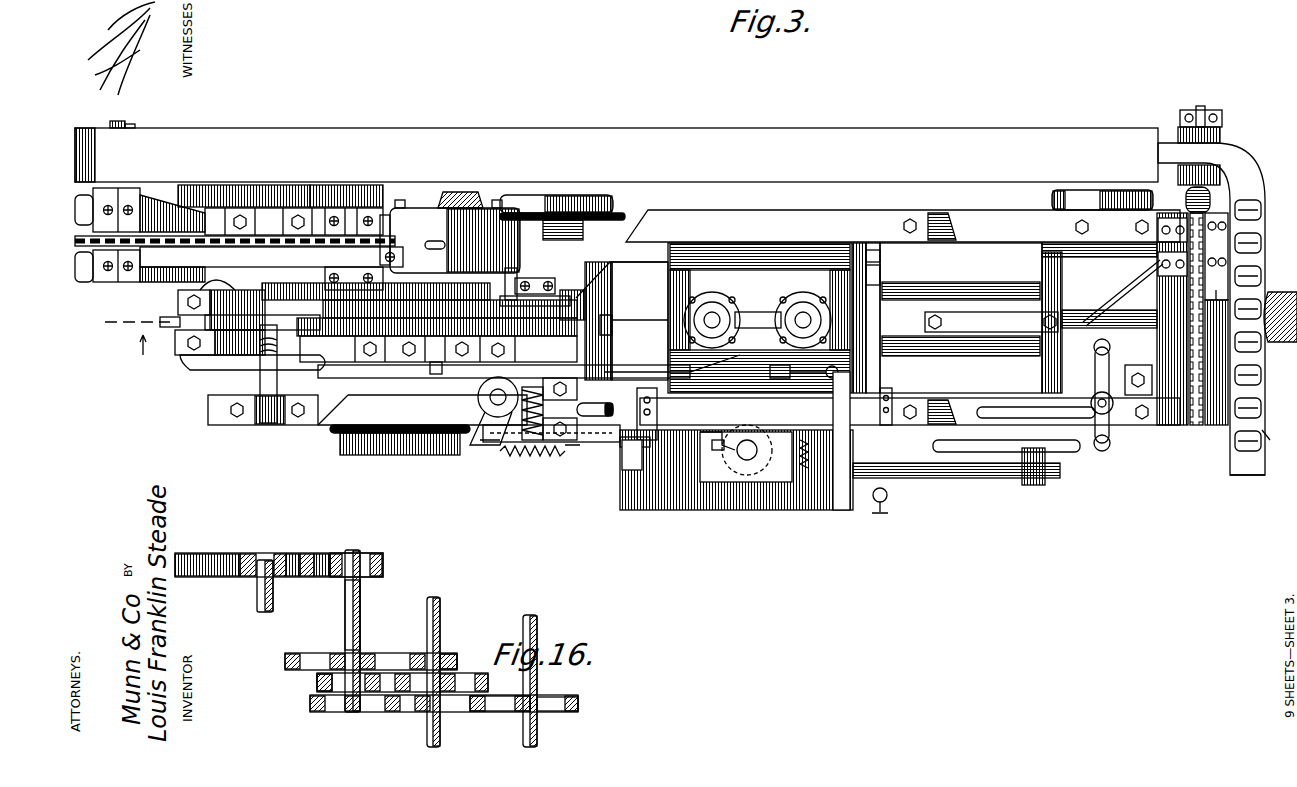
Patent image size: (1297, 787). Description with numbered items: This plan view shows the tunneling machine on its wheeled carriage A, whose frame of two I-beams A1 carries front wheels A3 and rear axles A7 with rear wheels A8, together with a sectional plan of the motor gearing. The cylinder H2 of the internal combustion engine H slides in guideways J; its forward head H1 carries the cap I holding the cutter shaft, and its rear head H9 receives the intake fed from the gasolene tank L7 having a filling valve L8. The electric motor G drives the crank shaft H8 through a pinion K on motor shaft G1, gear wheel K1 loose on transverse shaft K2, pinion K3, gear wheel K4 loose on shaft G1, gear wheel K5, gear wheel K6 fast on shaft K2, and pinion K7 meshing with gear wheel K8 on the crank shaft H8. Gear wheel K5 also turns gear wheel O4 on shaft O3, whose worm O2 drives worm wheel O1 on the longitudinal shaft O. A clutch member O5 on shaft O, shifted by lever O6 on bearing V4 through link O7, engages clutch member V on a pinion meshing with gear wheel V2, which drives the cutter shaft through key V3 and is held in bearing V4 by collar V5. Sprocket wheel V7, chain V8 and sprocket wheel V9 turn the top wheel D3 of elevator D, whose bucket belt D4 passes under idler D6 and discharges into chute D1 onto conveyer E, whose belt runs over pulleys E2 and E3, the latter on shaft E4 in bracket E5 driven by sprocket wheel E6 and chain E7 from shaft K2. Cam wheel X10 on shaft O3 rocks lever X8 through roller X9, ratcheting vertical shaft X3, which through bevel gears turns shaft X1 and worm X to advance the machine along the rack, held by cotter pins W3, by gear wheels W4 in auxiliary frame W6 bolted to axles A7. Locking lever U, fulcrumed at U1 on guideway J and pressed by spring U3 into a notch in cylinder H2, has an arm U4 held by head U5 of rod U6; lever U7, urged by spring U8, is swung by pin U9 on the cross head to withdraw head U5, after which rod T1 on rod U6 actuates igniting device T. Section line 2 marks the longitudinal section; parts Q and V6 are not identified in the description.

In FIG. 3, the top frame beam E is at (1029, 147).
In FIG. 3, the beam end bracket E2 is at (1215, 128).
In FIG. 3, the beam lug E3 is at (130, 128).
In FIG. 3, the beam lug E4 is at (113, 126).
In FIG. 3, the left bearing block E5 is at (116, 270).
In FIG. 3, the left lower bearing block E6 is at (88, 270).
In FIG. 3, the chain shaft E7 is at (240, 247).
In FIG. 3, the sprocket D is at (1263, 372).
In FIG. 3, the chain guide arm D1 is at (1245, 165).
In FIG. 3, the chain D3 is at (1262, 236).
In FIG. 3, the chain end D4 is at (1250, 445).
In FIG. 3, the chain link D6 is at (1262, 440).
In FIG. 3, the gear column V is at (1175, 426).
In FIG. 3, the bolt block V2 is at (1156, 308).
In FIG. 3, the bar V3 is at (1020, 290).
In FIG. 3, the diagonal rod V4 is at (1112, 294).
In FIG. 3, the vertical gear V5 is at (1042, 262).
In FIG. 3, the plate V6 is at (1210, 295).
In FIG. 3, the rack V7 is at (1196, 426).
In FIG. 3, the block V8 is at (1215, 319).
In FIG. 3, the cap V9 is at (1185, 222).
In FIG. 3, the longitudinal beam J is at (854, 218).
In FIG. 3, the main frame A is at (1018, 318).
In FIG. 3, the frame wedge A1 is at (948, 225).
In FIG. 3, the frame pad A3 is at (1095, 190).
In FIG. 3, the frame pad A7 is at (584, 226).
In FIG. 3, the frame pad A8 is at (543, 195).
In FIG. 3, the gear housing G is at (420, 208).
In FIG. 16, the shaft G1 is at (442, 636).
In FIG. 3, the gear K is at (343, 254).
In FIG. 16, the gear K is at (458, 660).
In FIG. 3, the gear K1 is at (305, 285).
In FIG. 16, the gear K1 is at (390, 653).
In FIG. 3, the shaft K2 is at (345, 290).
In FIG. 16, the shaft K2 is at (345, 628).
In FIG. 3, the gear K3 is at (438, 349).
In FIG. 16, the gear K3 is at (317, 685).
In FIG. 3, the gear K4 is at (455, 318).
In FIG. 16, the gear K4 is at (475, 678).
In FIG. 3, the gear K5 is at (415, 362).
In FIG. 16, the gear K5 is at (470, 712).
In FIG. 3, the gear K6 is at (312, 405).
In FIG. 16, the gear K6 is at (335, 712).
In FIG. 3, the gear K7 is at (375, 185).
In FIG. 16, the gear K7 is at (348, 550).
In FIG. 3, the gear K8 is at (278, 185).
In FIG. 16, the gear K8 is at (242, 553).
In FIG. 3, the bracket H is at (622, 280).
In FIG. 3, the block H1 is at (872, 265).
In FIG. 3, the carriage H2 is at (790, 262).
In FIG. 3, the shaft H8 is at (260, 378).
In FIG. 16, the shaft H8 is at (257, 600).
In FIG. 3, the housing H9 is at (634, 316).
In FIG. 3, the plate I is at (880, 283).
In FIG. 3, the bearing Q is at (710, 292).
In FIG. 3, the rod O is at (600, 403).
In FIG. 3, the spring O1 is at (532, 455).
In FIG. 3, the plate O2 is at (505, 448).
In FIG. 3, the shaft O3 is at (535, 280).
In FIG. 16, the shaft O3 is at (538, 648).
In FIG. 3, the ratchet O4 is at (550, 372).
In FIG. 16, the ratchet O4 is at (540, 697).
In FIG. 3, the link O5 is at (1096, 412).
In FIG. 3, the link pin O6 is at (1110, 443).
In FIG. 3, the rod O7 is at (1005, 452).
In FIG. 3, the cam X is at (260, 300).
In FIG. 3, the block X1 is at (178, 300).
In FIG. 3, the column X3 is at (585, 265).
In FIG. 3, the gear X8 is at (583, 280).
In FIG. 3, the block X9 is at (545, 278).
In FIG. 3, the pin X10 is at (518, 270).
In FIG. 3, the arrow W3 is at (180, 342).
In FIG. 3, the block W4 is at (190, 292).
In FIG. 3, the gear W6 is at (205, 355).
In FIG. 3, the section line 2 is at (133, 320).
In FIG. 3, the housing U is at (765, 470).
In FIG. 3, the disc U1 is at (747, 440).
In FIG. 3, the plate U3 is at (795, 470).
In FIG. 3, the block U4 is at (715, 468).
In FIG. 3, the pawl U5 is at (717, 422).
In FIG. 3, the rod U6 is at (630, 437).
In FIG. 3, the cam U7 is at (478, 410).
In FIG. 3, the spring end U8 is at (552, 452).
In FIG. 3, the pin U9 is at (440, 372).
In FIG. 3, the lever T is at (850, 378).
In FIG. 3, the block T1 is at (640, 392).
In FIG. 3, the bar L7 is at (952, 473).
In FIG. 3, the bolt L8 is at (888, 496).